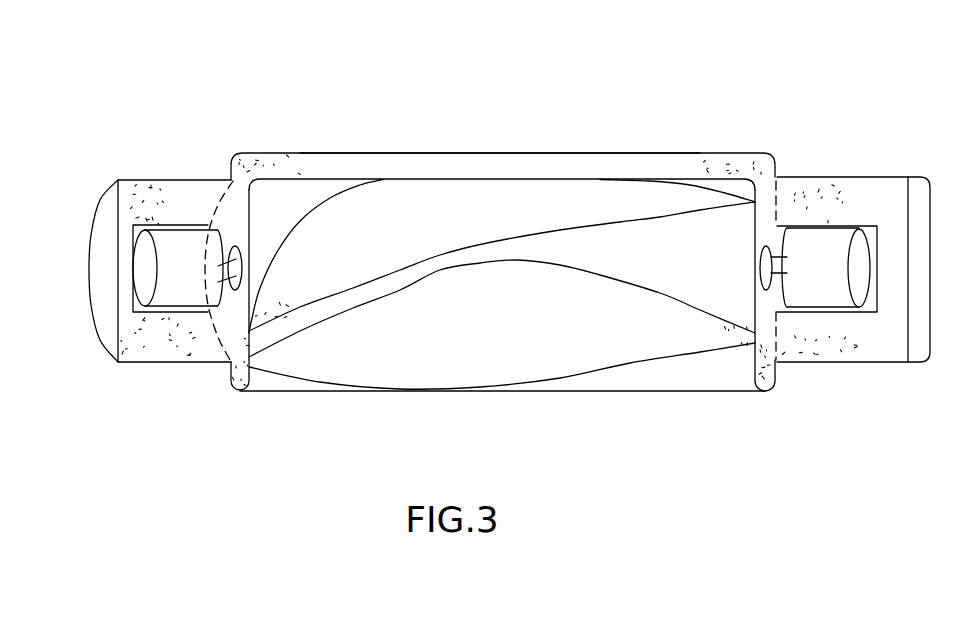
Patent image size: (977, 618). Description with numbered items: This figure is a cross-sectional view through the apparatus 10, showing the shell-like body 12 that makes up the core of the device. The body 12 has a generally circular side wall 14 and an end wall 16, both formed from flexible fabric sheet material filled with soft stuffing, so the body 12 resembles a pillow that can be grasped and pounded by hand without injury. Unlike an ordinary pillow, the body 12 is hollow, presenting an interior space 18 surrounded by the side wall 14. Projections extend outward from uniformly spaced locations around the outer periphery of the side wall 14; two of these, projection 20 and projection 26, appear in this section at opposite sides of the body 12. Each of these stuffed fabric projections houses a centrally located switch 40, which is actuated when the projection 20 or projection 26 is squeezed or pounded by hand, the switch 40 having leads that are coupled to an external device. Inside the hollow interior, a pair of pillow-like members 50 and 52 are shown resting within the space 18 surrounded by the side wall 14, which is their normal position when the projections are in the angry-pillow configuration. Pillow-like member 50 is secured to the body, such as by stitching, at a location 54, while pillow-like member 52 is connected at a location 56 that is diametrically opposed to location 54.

The apparatus 10 is at (496, 84).
The shell-like body 12 is at (261, 154).
The side wall 14 is at (228, 382).
The end wall 16 is at (637, 153).
The space 18 is at (735, 238).
The projection 20 is at (862, 180).
The projection 26 is at (168, 178).
The switch 40 is at (137, 273).
The pillow-like member 50 is at (430, 197).
The pillow-like member 52 is at (565, 368).
The location 54 is at (280, 310).
The location 56 is at (753, 344).